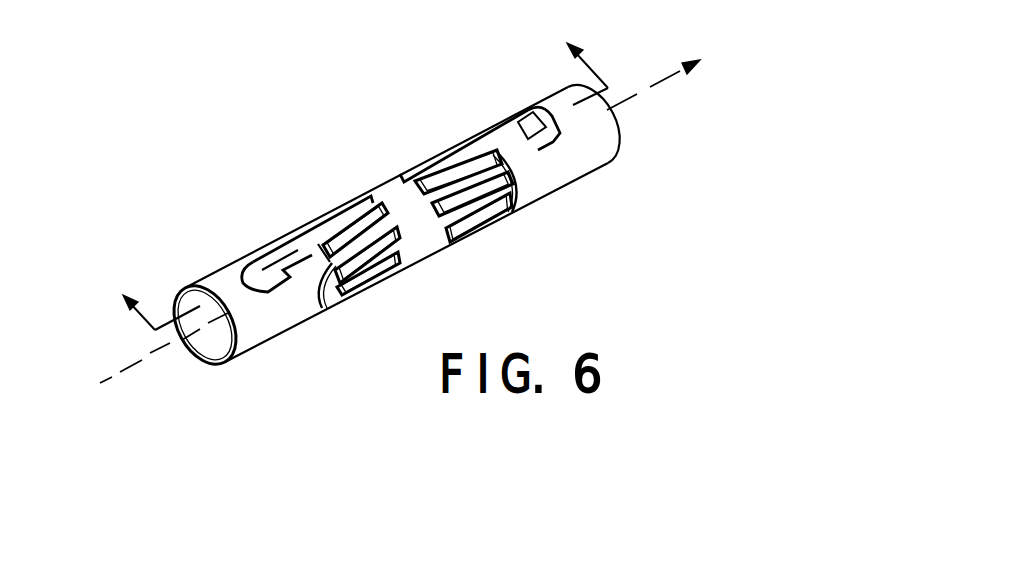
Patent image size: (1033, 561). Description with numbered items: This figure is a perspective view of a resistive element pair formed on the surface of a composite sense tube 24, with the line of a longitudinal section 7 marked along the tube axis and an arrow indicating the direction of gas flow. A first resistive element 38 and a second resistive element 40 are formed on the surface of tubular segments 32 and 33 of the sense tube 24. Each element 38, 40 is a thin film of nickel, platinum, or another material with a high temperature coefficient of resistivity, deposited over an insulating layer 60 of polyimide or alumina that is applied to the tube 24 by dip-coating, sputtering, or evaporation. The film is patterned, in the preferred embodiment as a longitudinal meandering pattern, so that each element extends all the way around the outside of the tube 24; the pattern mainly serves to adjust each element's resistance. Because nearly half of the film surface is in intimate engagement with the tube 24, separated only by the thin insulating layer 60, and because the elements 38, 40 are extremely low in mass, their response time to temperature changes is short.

The sense tube 24 is at (238, 363).
The tubular segment 32 is at (520, 184).
The tubular segment 33 is at (318, 296).
The first resistive element 38 is at (389, 276).
The second resistive element 40 is at (477, 214).
The insulating layer 60 is at (248, 274).
The section line 7- 7 is at (482, 197).